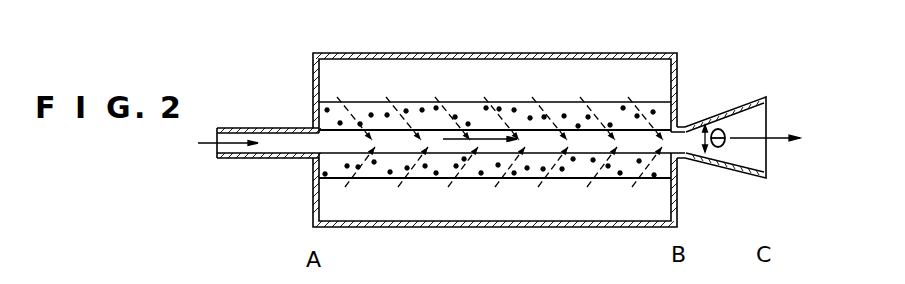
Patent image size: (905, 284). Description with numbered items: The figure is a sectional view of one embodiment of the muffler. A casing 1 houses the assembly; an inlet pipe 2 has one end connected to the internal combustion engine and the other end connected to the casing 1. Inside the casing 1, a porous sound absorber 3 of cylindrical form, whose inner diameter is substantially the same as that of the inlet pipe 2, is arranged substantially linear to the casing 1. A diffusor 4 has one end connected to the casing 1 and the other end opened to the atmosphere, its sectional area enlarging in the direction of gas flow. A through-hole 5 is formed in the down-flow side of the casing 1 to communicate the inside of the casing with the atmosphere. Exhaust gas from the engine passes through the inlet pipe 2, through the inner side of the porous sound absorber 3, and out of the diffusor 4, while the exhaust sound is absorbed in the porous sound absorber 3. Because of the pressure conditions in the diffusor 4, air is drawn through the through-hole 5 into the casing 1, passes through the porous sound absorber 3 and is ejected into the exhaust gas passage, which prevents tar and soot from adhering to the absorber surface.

The casing 1 is at (462, 53).
The inlet pipe 2 is at (257, 127).
The porous sound absorber 3 is at (527, 107).
The diffusor 4 is at (720, 113).
The through-hole 5 is at (641, 52).